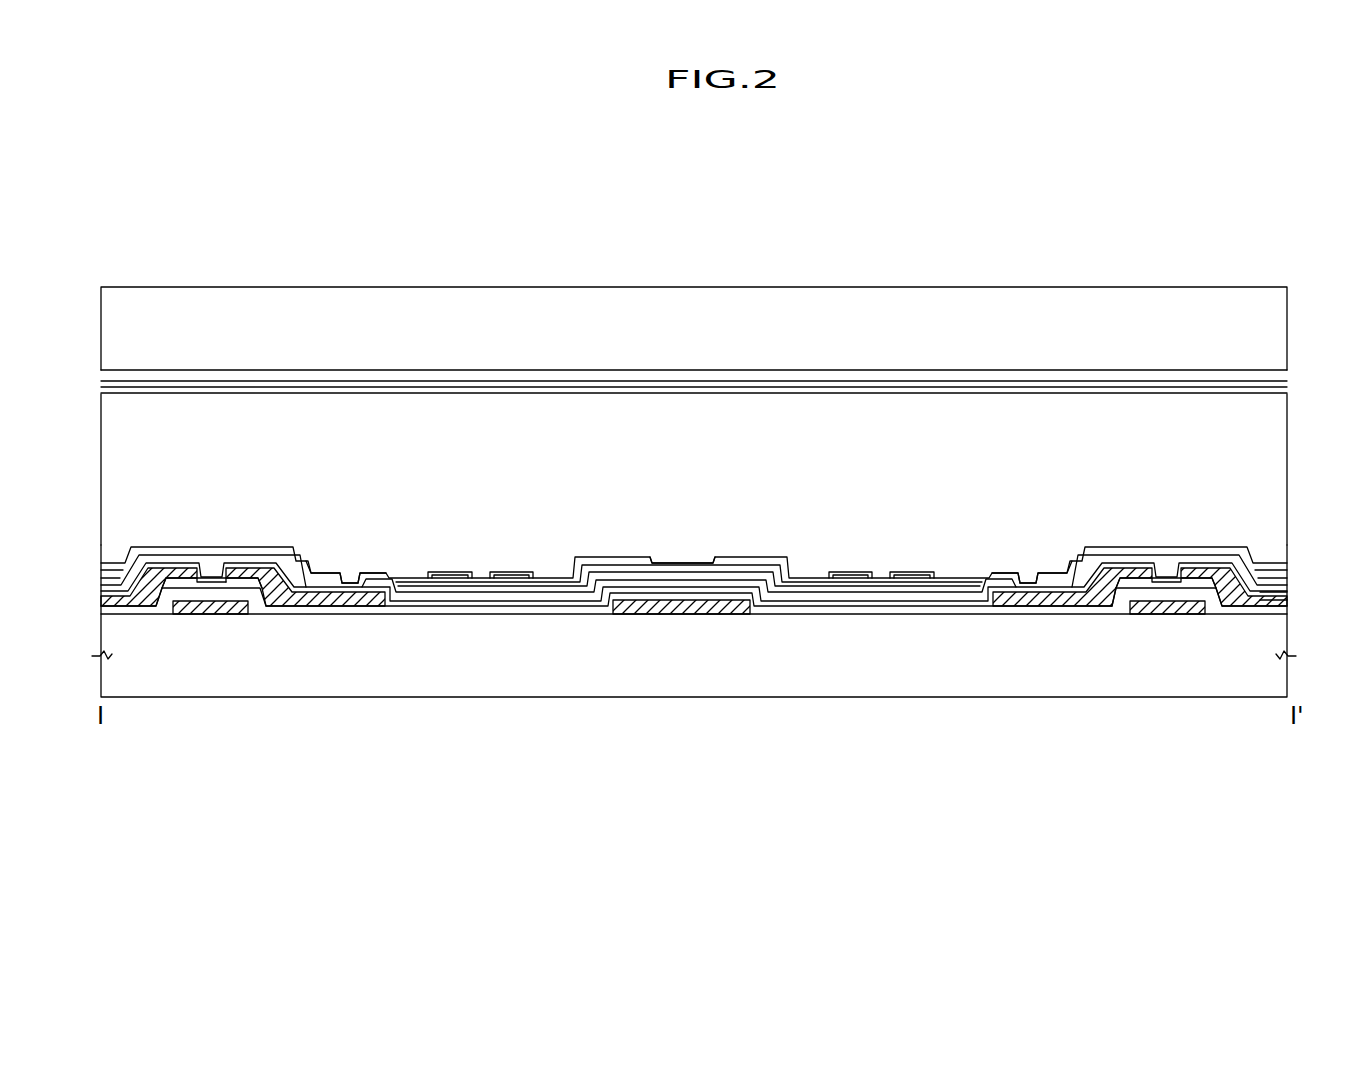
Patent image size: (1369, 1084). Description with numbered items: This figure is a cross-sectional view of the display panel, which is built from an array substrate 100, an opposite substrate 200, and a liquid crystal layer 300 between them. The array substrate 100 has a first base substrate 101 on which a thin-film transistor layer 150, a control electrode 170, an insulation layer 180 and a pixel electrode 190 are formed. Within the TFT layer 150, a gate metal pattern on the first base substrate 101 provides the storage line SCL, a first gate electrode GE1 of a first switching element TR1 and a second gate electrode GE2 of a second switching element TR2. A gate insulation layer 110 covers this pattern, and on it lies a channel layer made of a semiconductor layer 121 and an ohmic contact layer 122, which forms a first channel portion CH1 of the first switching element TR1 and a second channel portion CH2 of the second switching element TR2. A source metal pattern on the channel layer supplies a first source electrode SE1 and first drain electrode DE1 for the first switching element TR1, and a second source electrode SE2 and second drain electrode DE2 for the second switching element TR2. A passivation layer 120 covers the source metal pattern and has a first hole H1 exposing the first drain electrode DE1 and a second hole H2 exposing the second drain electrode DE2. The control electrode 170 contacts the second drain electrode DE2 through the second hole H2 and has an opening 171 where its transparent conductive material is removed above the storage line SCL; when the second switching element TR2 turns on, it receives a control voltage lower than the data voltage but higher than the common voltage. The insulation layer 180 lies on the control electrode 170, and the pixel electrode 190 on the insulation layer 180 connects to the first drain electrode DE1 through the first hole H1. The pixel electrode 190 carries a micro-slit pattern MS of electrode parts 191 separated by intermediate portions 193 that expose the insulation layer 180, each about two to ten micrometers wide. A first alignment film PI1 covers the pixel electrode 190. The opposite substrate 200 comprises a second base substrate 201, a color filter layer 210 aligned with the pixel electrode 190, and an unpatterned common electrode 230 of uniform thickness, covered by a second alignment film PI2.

The array substrate 100 is at (100, 548).
The first base substrate 101 is at (762, 665).
The gate insulation layer 110 is at (832, 608).
The passivation layer 120 is at (542, 690).
The semiconductor layer 121 is at (276, 598).
The ohmic contact layer 122 is at (290, 597).
The thin-film transistor layer 150 is at (1292, 590).
The control electrode 170 is at (497, 589).
The opening 171 is at (683, 583).
The insulation layer 180 is at (556, 583).
The pixel electrode 190 is at (756, 578).
The electrode part 191 is at (448, 575).
The intermediate portion 193 is at (484, 575).
The opposite substrate 200 is at (703, 359).
The second base substrate 201 is at (1278, 329).
The color filter layer 210 is at (1287, 377).
The common electrode 230 is at (1287, 387).
The liquid crystal layer 300 is at (100, 396).
The first alignment film PI1 is at (1287, 572).
The second alignment film PI2 is at (1287, 393).
The micro-slit pattern MS is at (681, 517).
The first hole H1 is at (353, 580).
The second hole H2 is at (1015, 681).
The storage line SCL is at (679, 612).
The first switching element TR1 is at (510, 707).
The second switching element TR2 is at (1123, 703).
The first gate electrode GE1 is at (208, 612).
The second gate electrode GE2 is at (1170, 612).
The first source electrode SE1 is at (121, 601).
The second source electrode SE2 is at (1268, 602).
The first drain electrode DE1 is at (305, 685).
The second drain electrode DE2 is at (1028, 603).
The first channel portion CH1 is at (261, 690).
The second channel portion CH2 is at (1101, 600).